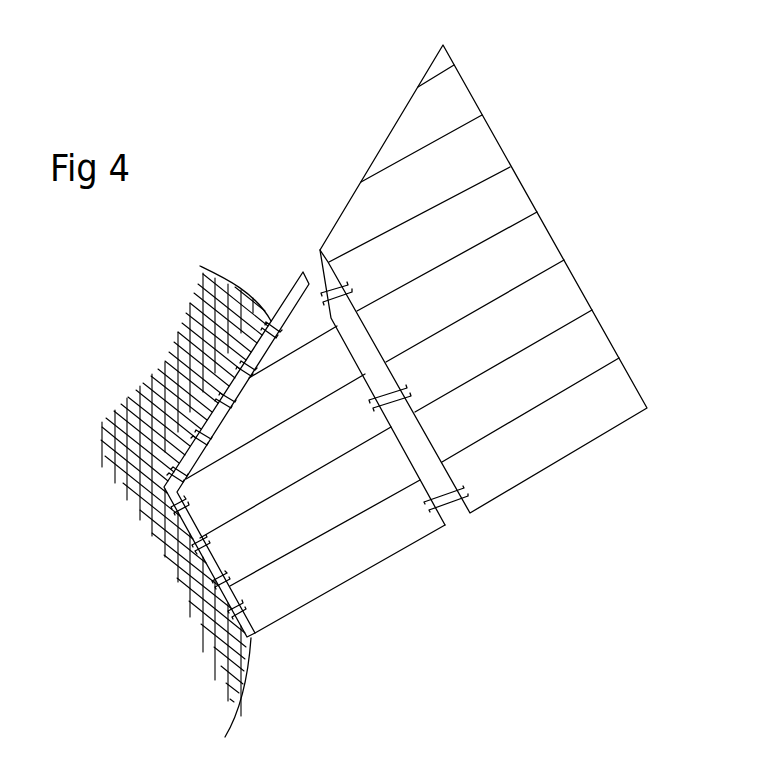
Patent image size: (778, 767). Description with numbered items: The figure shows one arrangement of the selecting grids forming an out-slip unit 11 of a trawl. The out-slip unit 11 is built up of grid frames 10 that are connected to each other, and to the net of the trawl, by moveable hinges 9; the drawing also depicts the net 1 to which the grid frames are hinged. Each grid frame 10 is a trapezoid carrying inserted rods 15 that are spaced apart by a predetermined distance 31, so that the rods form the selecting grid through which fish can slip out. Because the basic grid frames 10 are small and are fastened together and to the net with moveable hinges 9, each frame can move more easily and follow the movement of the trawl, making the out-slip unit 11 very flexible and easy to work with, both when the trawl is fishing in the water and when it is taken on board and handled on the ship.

The net/mesh 1 is at (180, 332).
The moveable hinge 9 is at (266, 330).
The grid frame 10 is at (536, 303).
The out-slip unit 11 is at (572, 151).
The rod 15 is at (557, 333).
The predetermined distance 31 is at (398, 479).